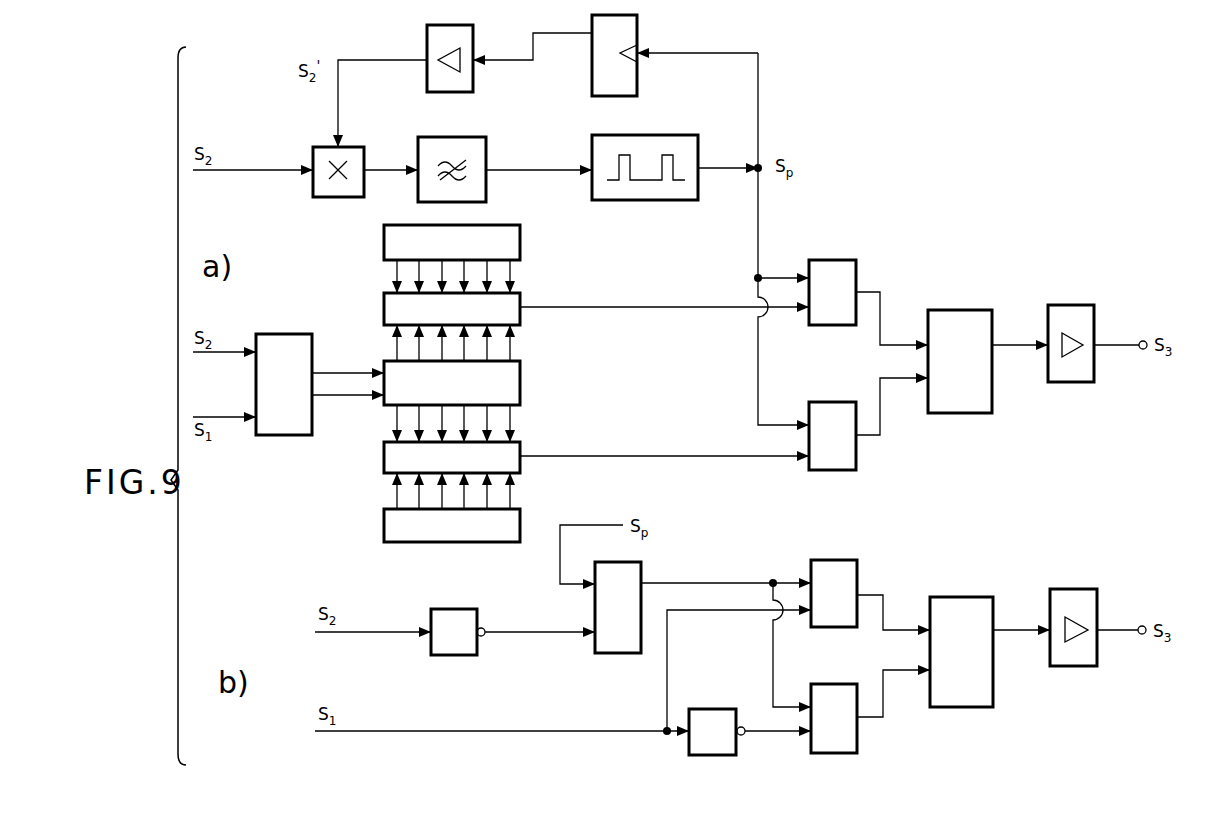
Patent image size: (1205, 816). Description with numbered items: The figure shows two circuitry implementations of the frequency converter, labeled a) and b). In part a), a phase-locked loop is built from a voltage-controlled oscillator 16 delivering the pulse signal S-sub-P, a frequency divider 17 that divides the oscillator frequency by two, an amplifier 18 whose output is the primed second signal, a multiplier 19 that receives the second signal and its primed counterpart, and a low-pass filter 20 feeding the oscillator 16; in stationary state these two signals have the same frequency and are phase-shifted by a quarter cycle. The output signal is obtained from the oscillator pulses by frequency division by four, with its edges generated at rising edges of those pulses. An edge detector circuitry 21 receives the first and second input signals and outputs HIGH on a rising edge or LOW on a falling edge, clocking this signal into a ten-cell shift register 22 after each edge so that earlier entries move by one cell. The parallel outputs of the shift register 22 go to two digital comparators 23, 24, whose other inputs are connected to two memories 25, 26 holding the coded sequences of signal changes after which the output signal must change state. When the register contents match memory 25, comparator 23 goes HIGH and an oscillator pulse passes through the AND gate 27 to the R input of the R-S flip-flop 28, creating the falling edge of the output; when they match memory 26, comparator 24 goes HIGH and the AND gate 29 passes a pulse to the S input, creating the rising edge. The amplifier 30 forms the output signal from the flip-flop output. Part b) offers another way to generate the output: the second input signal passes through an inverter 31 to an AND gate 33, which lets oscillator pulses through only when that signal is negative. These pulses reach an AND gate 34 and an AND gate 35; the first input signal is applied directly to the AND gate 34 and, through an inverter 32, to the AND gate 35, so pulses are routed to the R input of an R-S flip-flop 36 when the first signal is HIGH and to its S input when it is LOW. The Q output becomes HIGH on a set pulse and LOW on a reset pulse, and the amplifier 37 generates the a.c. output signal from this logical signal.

The voltage-controlled oscillator 16 is at (698, 144).
The frequency divider 17 is at (637, 31).
The amplifier 18 is at (473, 31).
The multiplier 19 is at (364, 156).
The low-pass filter 20 is at (486, 143).
The edge detector circuitry 21 is at (312, 345).
The shift register 22 is at (520, 374).
The digital comparator 23 is at (520, 299).
The digital comparator 24 is at (520, 450).
The memory 25 is at (520, 236).
The memory 26 is at (520, 518).
The AND gate 27 is at (856, 270).
The R-S flip-flop 28 is at (992, 322).
The AND gate 29 is at (856, 462).
The amplifier 30 is at (1094, 318).
The inverter 31 is at (477, 615).
The inverter 32 is at (689, 745).
The AND gate 33 is at (641, 569).
The AND gate 34 is at (857, 565).
The AND gate 35 is at (857, 745).
The R-S flip-flop 36 is at (993, 606).
The amplifier 37 is at (1097, 600).